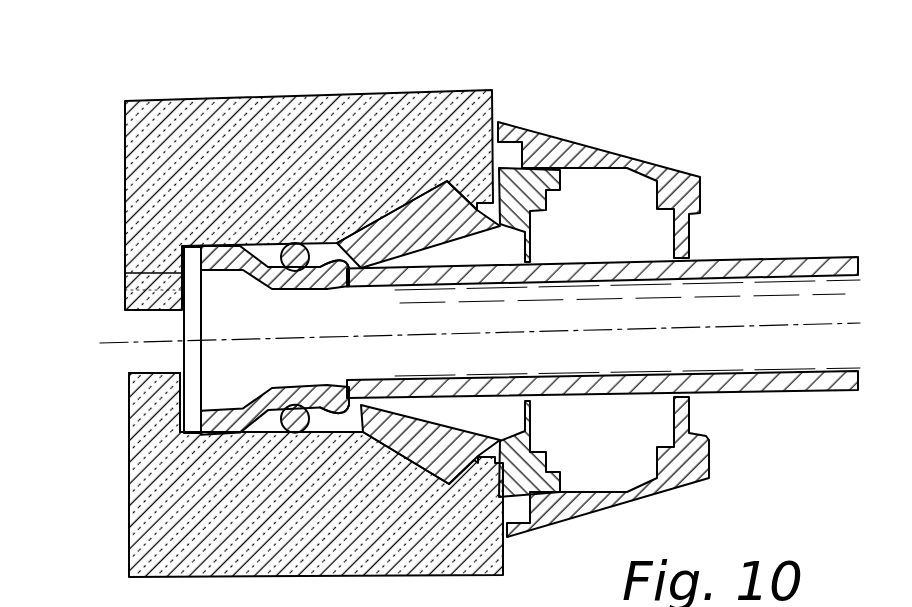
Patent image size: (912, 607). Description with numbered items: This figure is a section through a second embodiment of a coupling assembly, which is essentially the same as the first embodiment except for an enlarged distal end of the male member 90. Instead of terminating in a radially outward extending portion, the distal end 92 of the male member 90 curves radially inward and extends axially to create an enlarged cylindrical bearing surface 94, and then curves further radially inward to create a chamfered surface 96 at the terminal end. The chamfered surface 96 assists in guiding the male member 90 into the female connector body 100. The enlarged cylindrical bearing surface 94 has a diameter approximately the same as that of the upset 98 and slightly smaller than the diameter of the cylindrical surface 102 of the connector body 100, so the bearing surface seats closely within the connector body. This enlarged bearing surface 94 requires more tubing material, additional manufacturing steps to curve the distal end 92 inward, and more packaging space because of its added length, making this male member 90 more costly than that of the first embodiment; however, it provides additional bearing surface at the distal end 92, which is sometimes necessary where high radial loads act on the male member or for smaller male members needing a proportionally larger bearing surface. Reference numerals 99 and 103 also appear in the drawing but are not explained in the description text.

The male member 90 is at (448, 264).
The distal end 92 is at (232, 243).
The enlarged cylindrical bearing surface 94 is at (218, 437).
The chamfered surface 96 is at (128, 461).
The upset 98 is at (335, 244).
The seal sleeve 99 is at (127, 274).
The female connector body 100 is at (415, 91).
The cylindrical surface 102 is at (272, 288).
The bore 103 is at (127, 290).